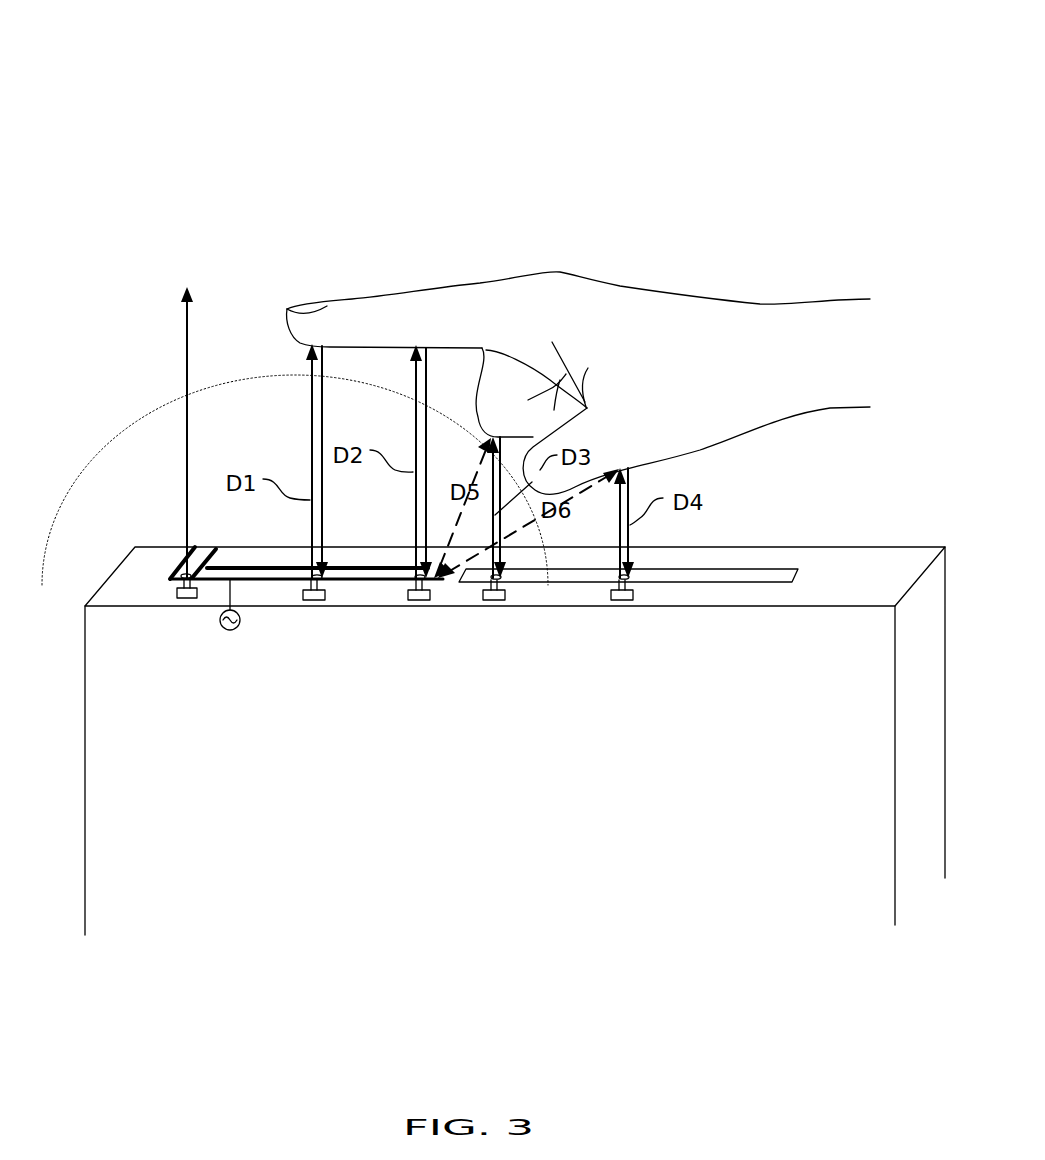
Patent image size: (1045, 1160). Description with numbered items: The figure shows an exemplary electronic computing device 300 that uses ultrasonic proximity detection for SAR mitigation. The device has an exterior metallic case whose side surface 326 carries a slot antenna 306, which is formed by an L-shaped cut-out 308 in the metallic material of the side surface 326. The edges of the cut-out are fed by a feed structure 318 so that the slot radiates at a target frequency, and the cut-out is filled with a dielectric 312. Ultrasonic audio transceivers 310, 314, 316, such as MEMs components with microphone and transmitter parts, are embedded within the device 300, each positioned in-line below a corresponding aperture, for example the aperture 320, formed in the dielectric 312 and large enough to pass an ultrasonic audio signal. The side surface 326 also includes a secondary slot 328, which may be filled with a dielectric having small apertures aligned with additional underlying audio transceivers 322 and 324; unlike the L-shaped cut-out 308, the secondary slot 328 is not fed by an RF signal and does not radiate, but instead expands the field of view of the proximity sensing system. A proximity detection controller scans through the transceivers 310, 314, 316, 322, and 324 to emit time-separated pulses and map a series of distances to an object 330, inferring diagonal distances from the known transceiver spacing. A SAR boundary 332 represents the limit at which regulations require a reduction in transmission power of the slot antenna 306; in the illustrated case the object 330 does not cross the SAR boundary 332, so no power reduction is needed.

The electronic computing device 300 is at (140, 67).
The slot antenna 306 is at (270, 604).
The L-shaped cut-out 308 is at (387, 580).
The ultrasonic audio transceiver 310 is at (177, 594).
The dielectric 312 is at (331, 574).
The ultrasonic audio transceiver 314 is at (325, 596).
The ultrasonic audio transceiver 316 is at (430, 596).
The feed structure 318 is at (222, 623).
The aperture 320 is at (182, 574).
The audio transceiver 322 is at (505, 596).
The audio transceiver 324 is at (633, 596).
The side surface 326 is at (829, 588).
The secondary slot 328 is at (690, 568).
The object 330 is at (680, 390).
The SAR boundary 332 is at (150, 413).